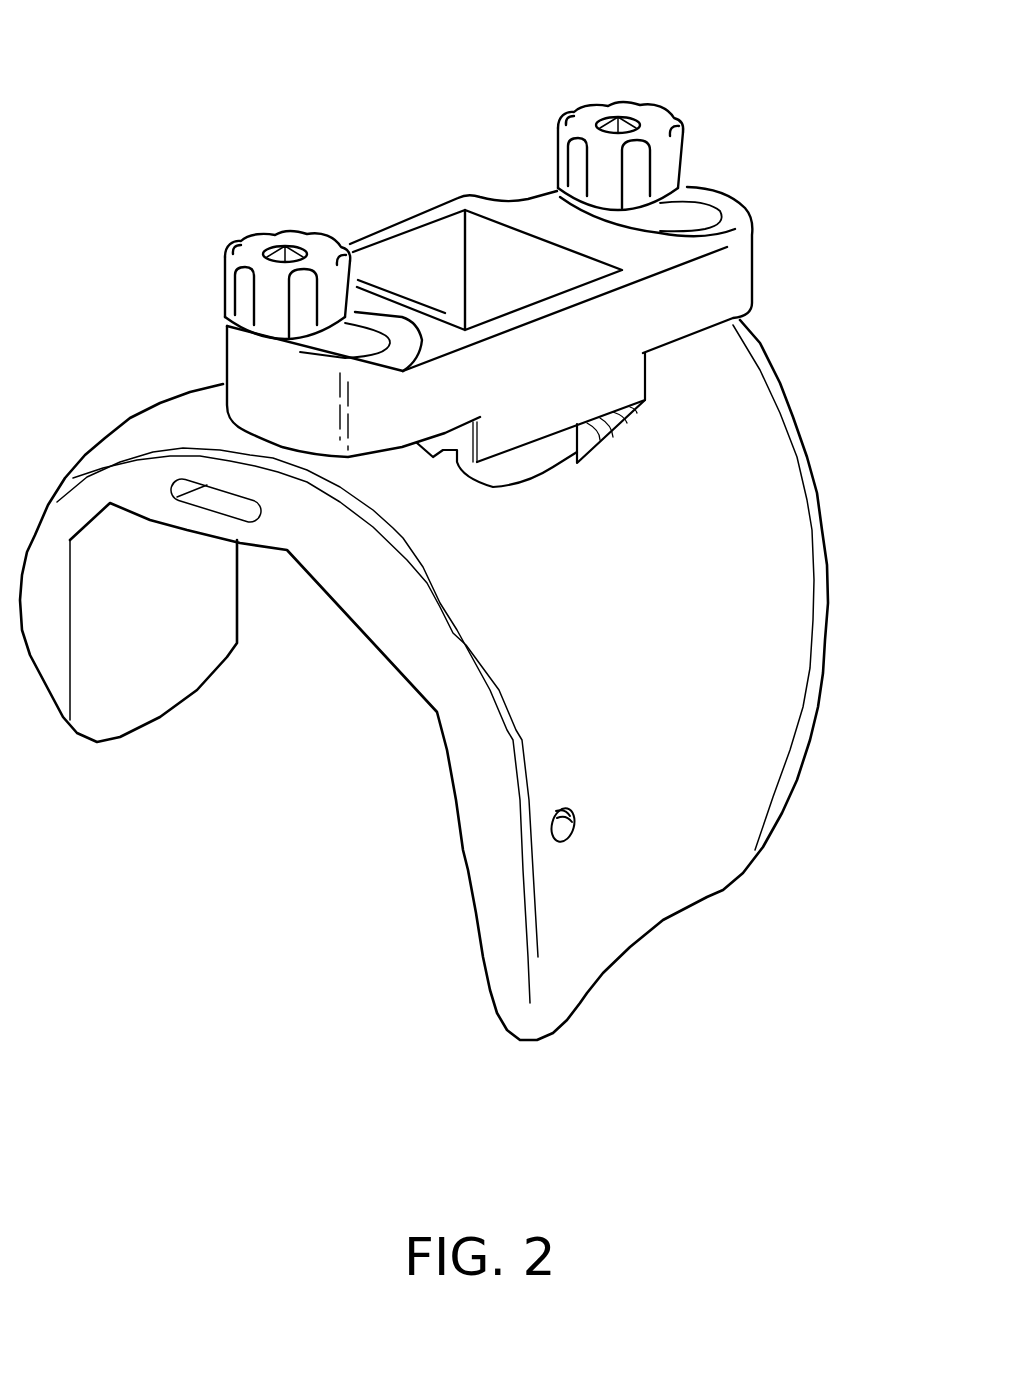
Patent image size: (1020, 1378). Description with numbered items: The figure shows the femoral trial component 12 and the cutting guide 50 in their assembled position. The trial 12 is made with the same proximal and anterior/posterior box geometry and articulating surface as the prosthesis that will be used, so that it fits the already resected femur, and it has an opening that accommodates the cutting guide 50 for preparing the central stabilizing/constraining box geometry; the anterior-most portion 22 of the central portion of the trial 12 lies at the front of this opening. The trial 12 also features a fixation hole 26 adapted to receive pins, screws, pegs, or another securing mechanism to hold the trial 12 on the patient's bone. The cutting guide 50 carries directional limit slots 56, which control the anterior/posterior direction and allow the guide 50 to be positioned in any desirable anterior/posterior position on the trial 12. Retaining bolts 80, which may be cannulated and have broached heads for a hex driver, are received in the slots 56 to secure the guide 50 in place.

The femoral trial component 12 is at (840, 469).
The anterior-most portion 22 is at (577, 463).
The fixation hole 26 is at (563, 829).
The cutting guide 50 is at (786, 255).
The directional limit slot 56 is at (282, 338).
The retaining bolt 80 is at (702, 110).